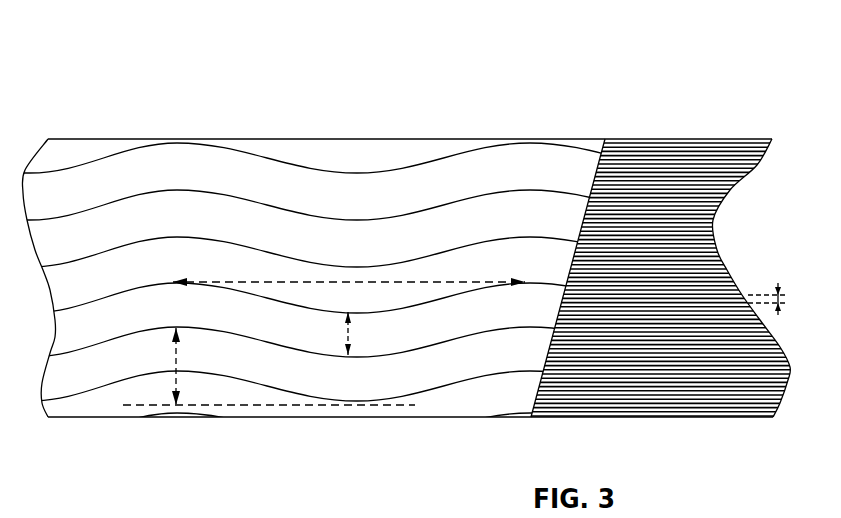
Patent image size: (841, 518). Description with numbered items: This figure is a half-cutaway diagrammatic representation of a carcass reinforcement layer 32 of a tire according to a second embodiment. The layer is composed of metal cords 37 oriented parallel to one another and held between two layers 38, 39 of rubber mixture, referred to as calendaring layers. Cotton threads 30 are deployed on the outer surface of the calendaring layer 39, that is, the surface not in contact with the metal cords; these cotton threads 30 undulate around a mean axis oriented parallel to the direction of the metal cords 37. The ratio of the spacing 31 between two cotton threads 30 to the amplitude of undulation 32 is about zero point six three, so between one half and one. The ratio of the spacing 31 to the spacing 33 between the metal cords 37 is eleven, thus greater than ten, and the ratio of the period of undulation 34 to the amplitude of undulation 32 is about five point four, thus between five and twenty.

The cotton threads 30 is at (117, 152).
The spacing between two cotton threads 31 is at (350, 330).
The carcass reinforcement layer 32 is at (404, 88).
The spacing between the metal cords 33 is at (782, 300).
The period of undulation 34 is at (243, 280).
The metal cords 37 is at (718, 198).
The calendaring layer 38 is at (707, 148).
The calendaring layer 39 is at (543, 165).